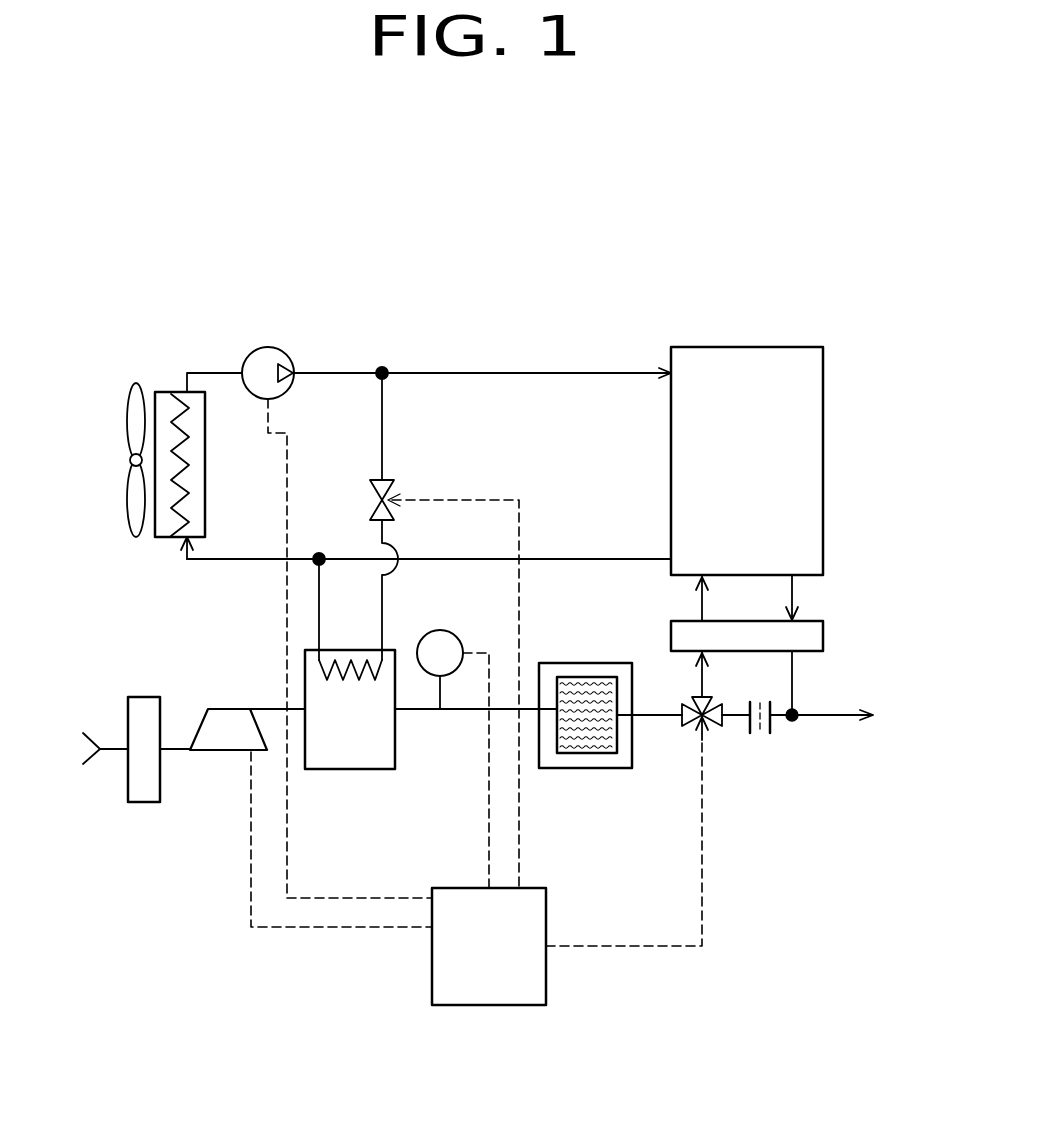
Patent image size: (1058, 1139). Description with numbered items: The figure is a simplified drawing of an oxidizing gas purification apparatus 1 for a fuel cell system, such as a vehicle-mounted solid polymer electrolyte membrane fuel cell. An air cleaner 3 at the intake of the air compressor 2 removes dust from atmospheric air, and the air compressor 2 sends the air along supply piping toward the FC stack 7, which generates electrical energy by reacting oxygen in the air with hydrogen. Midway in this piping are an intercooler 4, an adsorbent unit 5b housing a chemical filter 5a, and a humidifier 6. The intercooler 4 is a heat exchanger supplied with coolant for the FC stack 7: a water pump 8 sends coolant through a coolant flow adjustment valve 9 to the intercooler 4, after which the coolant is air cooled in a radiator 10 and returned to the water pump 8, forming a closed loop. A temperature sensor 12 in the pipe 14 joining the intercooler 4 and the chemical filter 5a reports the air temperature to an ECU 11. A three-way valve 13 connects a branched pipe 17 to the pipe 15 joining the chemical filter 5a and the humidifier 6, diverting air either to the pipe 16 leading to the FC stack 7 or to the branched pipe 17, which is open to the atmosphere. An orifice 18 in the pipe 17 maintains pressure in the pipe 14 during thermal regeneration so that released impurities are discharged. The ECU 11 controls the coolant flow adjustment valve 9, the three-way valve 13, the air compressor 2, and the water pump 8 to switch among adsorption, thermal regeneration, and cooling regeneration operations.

The oxidizing gas purification apparatus 1 is at (560, 289).
The air compressor 2 is at (218, 708).
The air cleaner 3 is at (143, 804).
The intercooler 4 is at (317, 771).
The chemical filter 5a is at (585, 730).
The adsorbent unit 5b is at (557, 663).
The humidifier 6 is at (820, 621).
The FC stack 7 is at (710, 347).
The water pump 8 is at (270, 347).
The coolant flow adjustment valve 9 is at (392, 486).
The radiator 10 is at (167, 392).
The ECU 11 is at (518, 1006).
The temperature sensor 12 is at (422, 640).
The three-way valve 13 is at (715, 727).
The pipe 14 is at (458, 712).
The pipe 15 is at (663, 718).
The pipe 16 is at (698, 683).
The branched pipe 17 is at (733, 726).
The orifice 18 is at (770, 725).